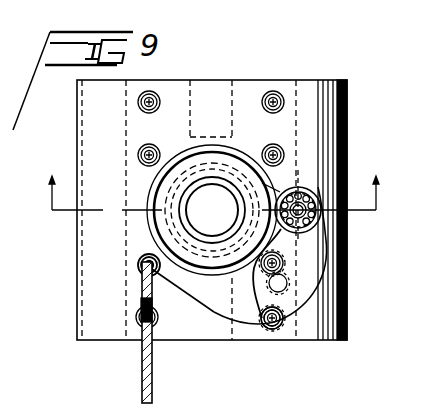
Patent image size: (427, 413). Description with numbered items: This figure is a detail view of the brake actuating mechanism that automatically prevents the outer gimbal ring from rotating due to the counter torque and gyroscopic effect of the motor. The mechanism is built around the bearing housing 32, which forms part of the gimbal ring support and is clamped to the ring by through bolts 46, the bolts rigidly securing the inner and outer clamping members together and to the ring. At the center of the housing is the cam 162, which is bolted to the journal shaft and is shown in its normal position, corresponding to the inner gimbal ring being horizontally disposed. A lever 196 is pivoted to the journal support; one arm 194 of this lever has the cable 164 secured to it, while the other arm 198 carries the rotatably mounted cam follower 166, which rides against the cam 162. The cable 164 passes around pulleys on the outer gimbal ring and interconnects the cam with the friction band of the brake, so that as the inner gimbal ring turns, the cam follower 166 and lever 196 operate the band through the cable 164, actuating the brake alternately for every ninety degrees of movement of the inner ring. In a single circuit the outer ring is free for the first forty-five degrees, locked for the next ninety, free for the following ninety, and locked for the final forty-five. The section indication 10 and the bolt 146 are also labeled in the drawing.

The section line 10 is at (214, 186).
The bearing housing 32 is at (318, 302).
The through bolts 46 is at (279, 93).
The bolt 146 is at (277, 330).
The cam 162 is at (238, 170).
The cable 164 is at (153, 372).
The cam follower 166 is at (306, 187).
The arm 194 is at (186, 292).
The lever 196 is at (271, 290).
The arm 198 is at (305, 242).